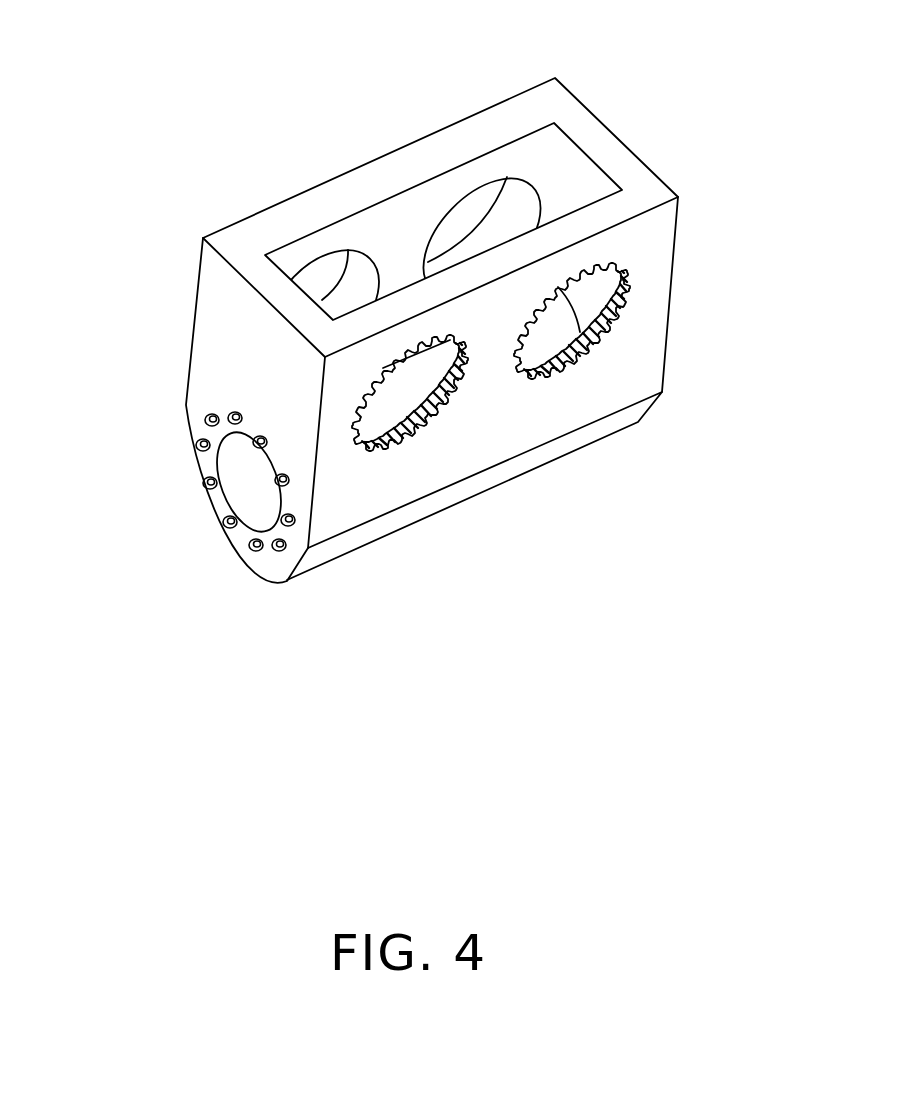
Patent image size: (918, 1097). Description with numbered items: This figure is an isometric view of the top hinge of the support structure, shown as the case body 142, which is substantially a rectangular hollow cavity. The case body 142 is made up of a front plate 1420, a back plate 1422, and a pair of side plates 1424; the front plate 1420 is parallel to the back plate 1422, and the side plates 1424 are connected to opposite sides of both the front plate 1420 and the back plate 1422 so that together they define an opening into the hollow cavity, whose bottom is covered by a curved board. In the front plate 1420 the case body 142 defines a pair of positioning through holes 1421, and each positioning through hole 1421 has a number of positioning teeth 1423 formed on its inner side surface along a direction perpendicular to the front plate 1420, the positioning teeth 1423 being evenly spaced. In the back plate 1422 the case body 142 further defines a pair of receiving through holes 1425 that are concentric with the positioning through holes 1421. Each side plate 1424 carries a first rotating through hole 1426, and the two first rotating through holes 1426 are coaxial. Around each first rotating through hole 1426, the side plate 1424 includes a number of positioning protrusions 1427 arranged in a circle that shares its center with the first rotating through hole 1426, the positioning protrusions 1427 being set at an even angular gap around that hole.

The case body 142 is at (357, 62).
The front plate 1420 is at (508, 432).
The positioning through holes 1421 is at (590, 287).
The back plate 1422 is at (398, 218).
The positioning teeth 1423 is at (600, 348).
The side plates 1424 is at (245, 345).
The receiving through holes 1425 is at (478, 207).
The first rotating through hole 1426 is at (245, 460).
The positioning protrusions 1427 is at (226, 527).